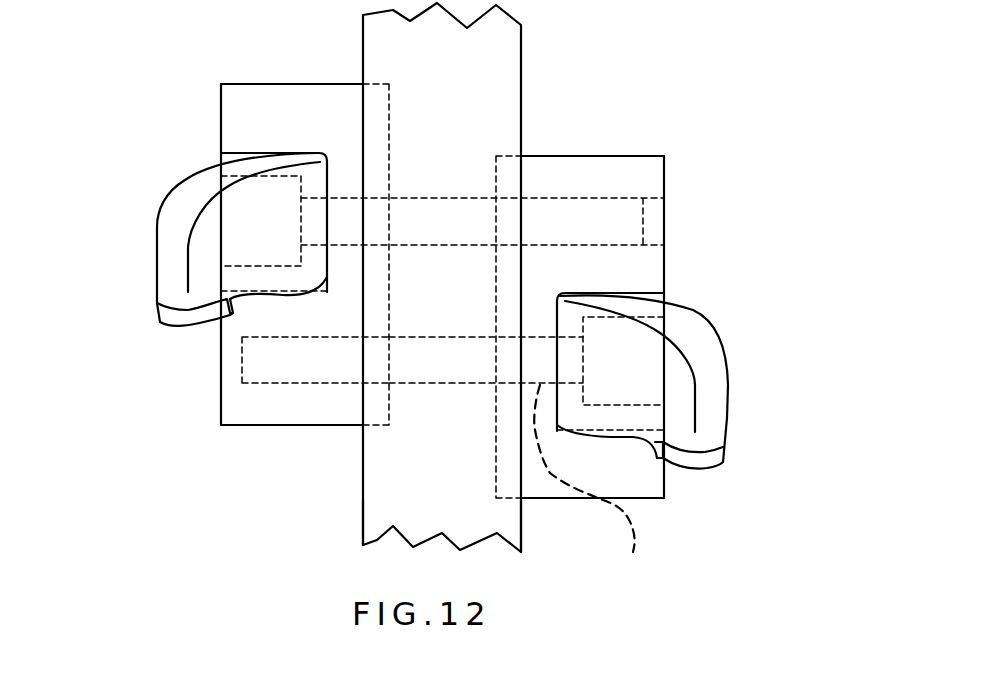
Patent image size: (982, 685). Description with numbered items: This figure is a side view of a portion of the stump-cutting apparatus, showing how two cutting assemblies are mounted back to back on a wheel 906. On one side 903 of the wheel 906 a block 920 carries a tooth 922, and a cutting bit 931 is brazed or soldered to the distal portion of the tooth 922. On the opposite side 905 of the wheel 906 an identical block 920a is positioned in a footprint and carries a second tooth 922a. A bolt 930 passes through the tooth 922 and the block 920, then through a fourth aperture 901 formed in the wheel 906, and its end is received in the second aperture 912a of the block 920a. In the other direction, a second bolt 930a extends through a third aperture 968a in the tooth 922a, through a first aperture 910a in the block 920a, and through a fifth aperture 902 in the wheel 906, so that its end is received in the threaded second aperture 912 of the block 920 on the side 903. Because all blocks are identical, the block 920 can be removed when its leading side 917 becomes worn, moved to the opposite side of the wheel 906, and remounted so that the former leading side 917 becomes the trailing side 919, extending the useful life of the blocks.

The fourth aperture 901 is at (436, 199).
The fifth aperture 902 is at (443, 383).
The side of wheel 903 is at (363, 480).
The opposite side of wheel 905 is at (523, 525).
The wheel 906 is at (363, 520).
The first aperture 910a is at (599, 482).
The second aperture 912 is at (271, 385).
The second aperture 912a is at (596, 199).
The leading side 917 is at (232, 425).
The trailing side 919 is at (278, 83).
The block 920 is at (220, 417).
The block 920a is at (665, 156).
The tooth 922 is at (157, 238).
The tooth 922a is at (730, 377).
The bolt 930 is at (220, 212).
The second bolt 930a is at (663, 367).
The cutting bit 931 is at (160, 320).
The third aperture 968a is at (635, 407).